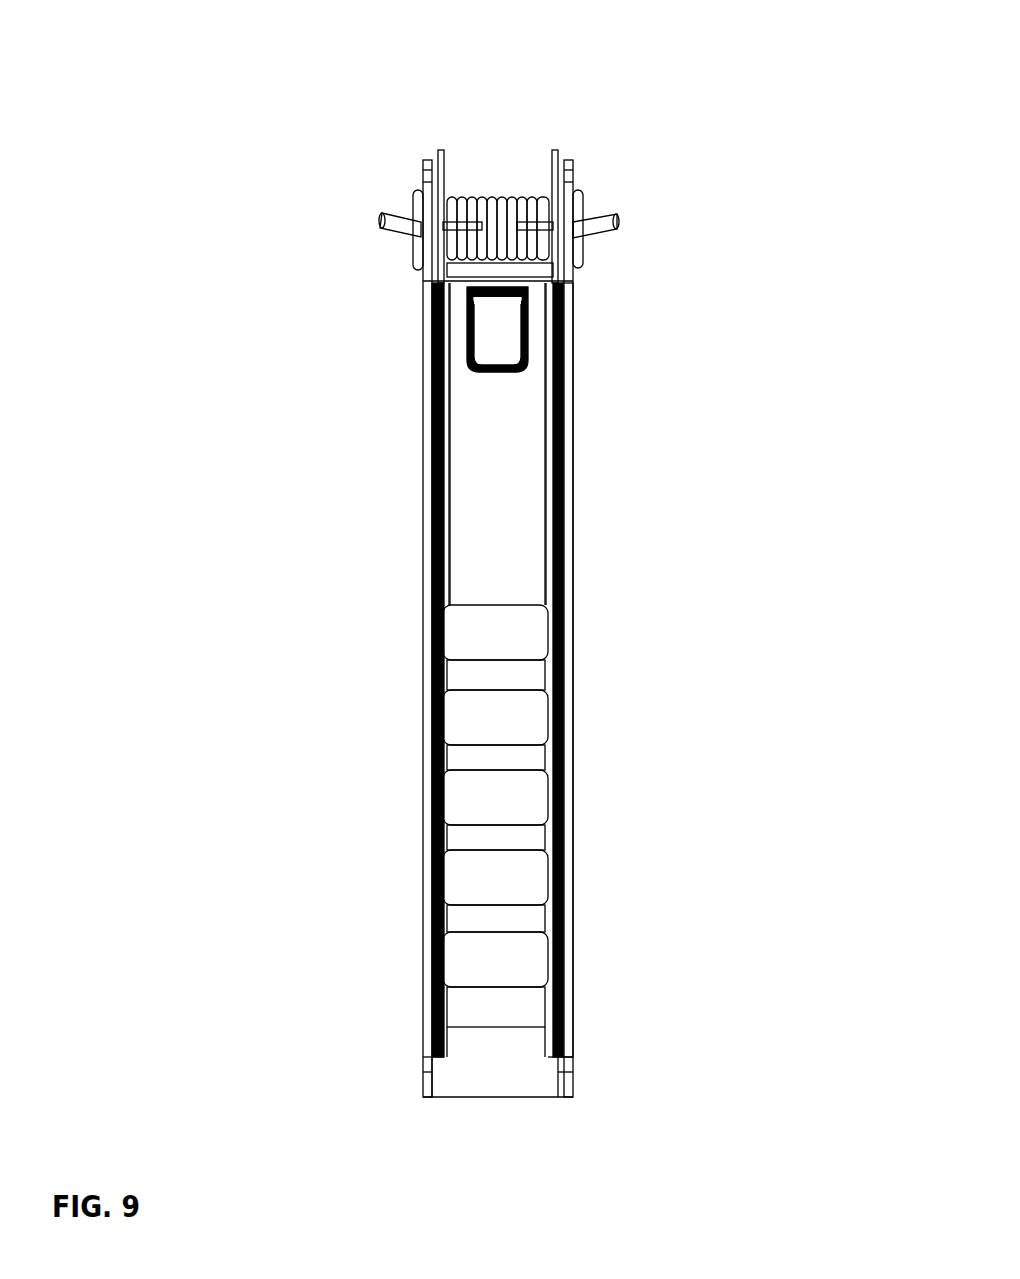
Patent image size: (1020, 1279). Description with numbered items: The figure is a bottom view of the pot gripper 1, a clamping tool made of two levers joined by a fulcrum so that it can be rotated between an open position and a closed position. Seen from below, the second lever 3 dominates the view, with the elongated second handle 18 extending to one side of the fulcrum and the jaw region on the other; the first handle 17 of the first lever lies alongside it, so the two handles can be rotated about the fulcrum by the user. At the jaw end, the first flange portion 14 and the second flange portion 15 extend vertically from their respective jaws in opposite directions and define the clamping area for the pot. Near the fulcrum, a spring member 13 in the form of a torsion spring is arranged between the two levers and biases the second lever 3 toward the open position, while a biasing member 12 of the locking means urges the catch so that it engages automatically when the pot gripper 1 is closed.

The pot gripper 1 is at (548, 550).
The second lever 3 is at (508, 506).
The biasing member 12 is at (527, 343).
The spring member 13 is at (496, 198).
The first flange portion 14 is at (398, 221).
The second flange portion 15 is at (470, 198).
The first handle 17 is at (578, 871).
The second handle 18 is at (520, 570).